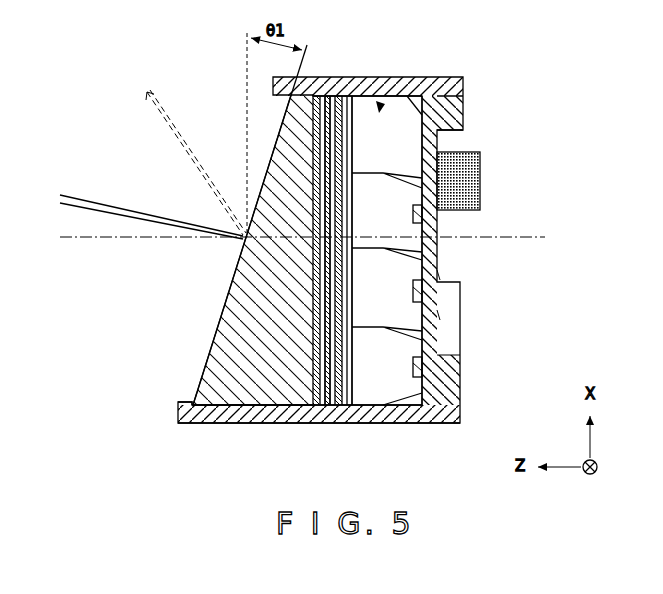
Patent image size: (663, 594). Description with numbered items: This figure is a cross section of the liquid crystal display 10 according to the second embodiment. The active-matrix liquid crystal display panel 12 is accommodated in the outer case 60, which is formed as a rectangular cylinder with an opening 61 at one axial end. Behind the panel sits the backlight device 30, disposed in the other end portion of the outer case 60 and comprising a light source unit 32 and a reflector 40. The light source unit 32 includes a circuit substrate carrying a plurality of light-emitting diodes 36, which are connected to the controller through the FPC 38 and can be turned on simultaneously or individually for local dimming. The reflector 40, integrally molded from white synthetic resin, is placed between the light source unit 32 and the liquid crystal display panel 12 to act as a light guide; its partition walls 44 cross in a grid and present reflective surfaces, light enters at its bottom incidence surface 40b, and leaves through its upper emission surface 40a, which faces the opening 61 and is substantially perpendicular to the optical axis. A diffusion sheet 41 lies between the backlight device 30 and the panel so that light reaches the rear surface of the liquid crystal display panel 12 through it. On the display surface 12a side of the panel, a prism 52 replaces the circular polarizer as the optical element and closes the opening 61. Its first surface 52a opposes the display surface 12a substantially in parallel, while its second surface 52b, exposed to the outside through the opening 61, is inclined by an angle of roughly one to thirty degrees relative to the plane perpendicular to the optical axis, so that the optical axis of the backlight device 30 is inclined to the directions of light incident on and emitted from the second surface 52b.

The liquid crystal display 10 is at (335, 232).
The liquid crystal display panel 12 is at (340, 420).
The display surface 12a is at (330, 128).
The backlight device 30 is at (398, 78).
The light source unit 32 is at (365, 252).
The light-emitting diodes 36 is at (442, 137).
The FPC 38 is at (481, 172).
The reflector 40 is at (437, 331).
The emission surface 40a is at (355, 143).
The incidence surface 40b is at (437, 302).
The diffusion sheet 41 is at (357, 77).
The partition walls 44 is at (440, 276).
The prism 52 is at (240, 293).
The first surface 52a is at (311, 424).
The second surface 52b is at (212, 352).
The outer case 60 is at (238, 424).
The opening 61 is at (178, 402).